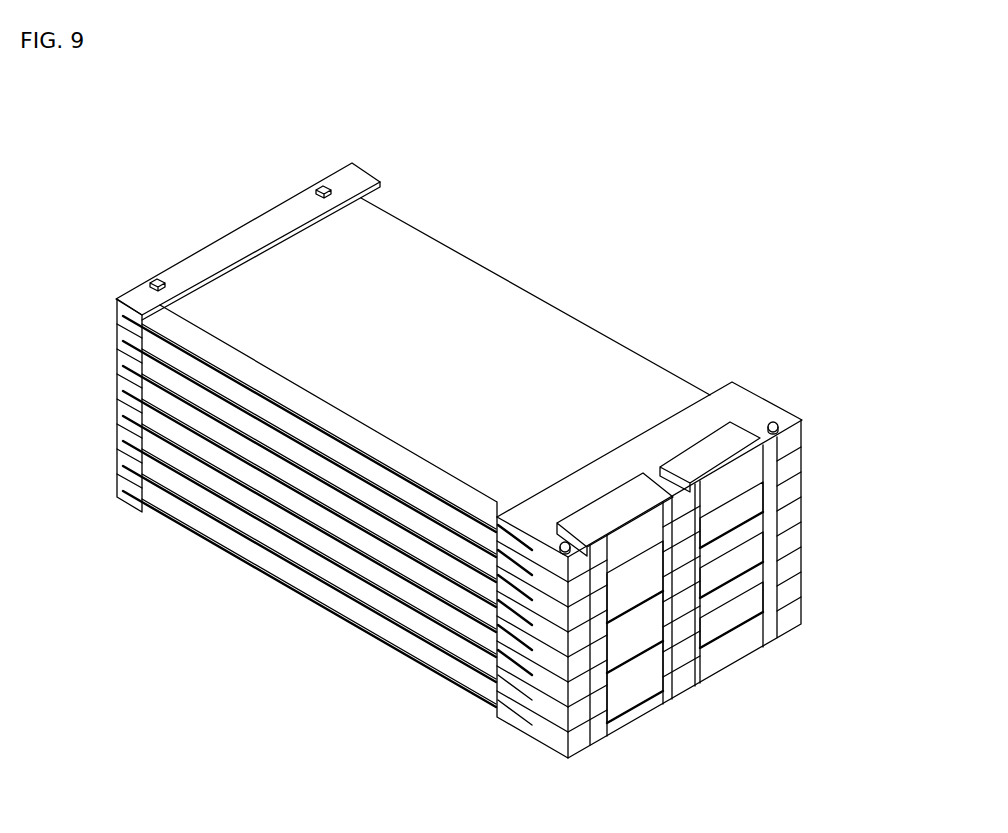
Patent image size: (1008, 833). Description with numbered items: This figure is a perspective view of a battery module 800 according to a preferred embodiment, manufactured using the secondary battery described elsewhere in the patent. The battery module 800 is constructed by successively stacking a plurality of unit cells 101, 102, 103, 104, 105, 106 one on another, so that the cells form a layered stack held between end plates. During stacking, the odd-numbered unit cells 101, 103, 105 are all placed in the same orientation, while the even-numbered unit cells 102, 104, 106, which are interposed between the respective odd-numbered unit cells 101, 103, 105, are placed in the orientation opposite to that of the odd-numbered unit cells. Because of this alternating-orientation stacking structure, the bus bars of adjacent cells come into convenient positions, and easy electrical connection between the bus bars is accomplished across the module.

The battery module 800 is at (205, 231).
The unit cell 101 is at (802, 432).
The unit cell 102 is at (802, 457).
The unit cell 103 is at (802, 482).
The unit cell 104 is at (802, 507).
The unit cell 105 is at (802, 532).
The unit cell 106 is at (802, 557).